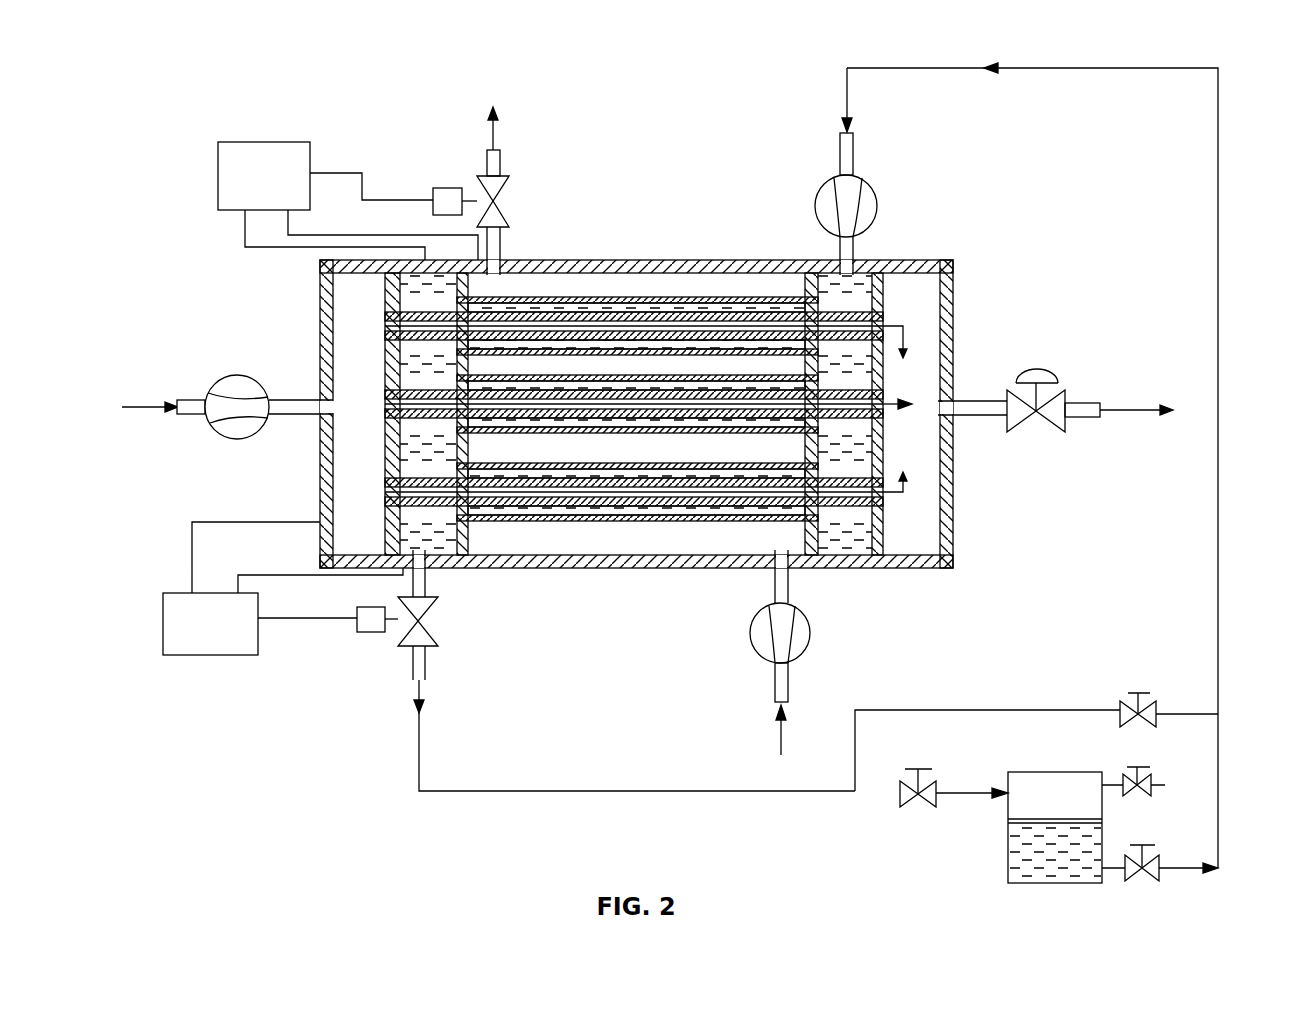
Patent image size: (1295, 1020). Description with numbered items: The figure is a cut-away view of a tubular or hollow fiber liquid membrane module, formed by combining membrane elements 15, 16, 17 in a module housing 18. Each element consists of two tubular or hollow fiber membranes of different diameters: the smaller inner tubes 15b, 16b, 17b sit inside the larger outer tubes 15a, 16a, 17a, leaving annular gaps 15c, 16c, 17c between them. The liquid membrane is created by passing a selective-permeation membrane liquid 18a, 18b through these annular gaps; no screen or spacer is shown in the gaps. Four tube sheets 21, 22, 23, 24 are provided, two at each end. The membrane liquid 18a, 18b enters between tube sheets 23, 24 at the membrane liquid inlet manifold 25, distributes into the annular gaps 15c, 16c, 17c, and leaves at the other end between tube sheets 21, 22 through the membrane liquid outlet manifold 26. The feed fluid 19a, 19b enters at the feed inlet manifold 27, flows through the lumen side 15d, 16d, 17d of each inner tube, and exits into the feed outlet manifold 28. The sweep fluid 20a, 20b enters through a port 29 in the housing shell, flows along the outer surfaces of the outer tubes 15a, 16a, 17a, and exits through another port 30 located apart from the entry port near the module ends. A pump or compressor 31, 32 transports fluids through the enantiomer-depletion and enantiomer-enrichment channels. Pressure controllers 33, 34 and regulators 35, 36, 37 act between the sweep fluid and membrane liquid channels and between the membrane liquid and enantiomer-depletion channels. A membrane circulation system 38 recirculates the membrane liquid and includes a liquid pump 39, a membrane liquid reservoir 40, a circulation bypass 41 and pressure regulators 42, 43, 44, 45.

The membrane element 15 is at (634, 283).
The outer tube 15a is at (653, 300).
The inner tube 15b is at (808, 315).
The annular gap 15c is at (535, 300).
The lumen side 15d is at (363, 345).
The membrane element 16 is at (596, 373).
The outer tube 16a is at (476, 378).
The inner tube 16b is at (417, 392).
The annular gap 16c is at (497, 392).
The lumen side 16d is at (381, 404).
The membrane element 17 is at (625, 530).
The outer tube 17a is at (545, 522).
The inner tube 17b is at (597, 524).
The annular gap 17c is at (641, 524).
The lumen side 17d is at (381, 492).
The module housing 18 is at (634, 262).
The membrane liquid 18a is at (865, 121).
The membrane liquid 18b is at (634, 735).
The feed fluid 19a is at (224, 393).
The feed fluid 19b is at (1055, 396).
The sweep fluid 20a is at (802, 730).
The sweep fluid 20b is at (497, 114).
The tube sheet 21 is at (413, 538).
The tube sheet 22 is at (477, 552).
The tube sheet 23 is at (826, 546).
The tube sheet 24 is at (892, 548).
The membrane liquid inlet manifold 25 is at (870, 270).
The membrane liquid outlet manifold 26 is at (385, 285).
The feed inlet manifold 27 is at (345, 487).
The feed outlet manifold 28 is at (923, 512).
The port 29 is at (775, 679).
The port 30 is at (500, 157).
The pump or compressor 31 is at (222, 380).
The pump or compressor 32 is at (752, 630).
The pressure controller 33 is at (253, 142).
The pressure controller 34 is at (172, 593).
The regulator 35 is at (440, 188).
The regulator 36 is at (362, 632).
The regulator 37 is at (1063, 395).
The membrane circulation system 38 is at (1226, 590).
The liquid pump 39 is at (877, 198).
The membrane liquid reservoir 40 is at (1008, 828).
The circulation bypass 41 is at (1003, 709).
The pressure regulator 42 is at (1133, 693).
The pressure regulator 43 is at (1140, 767).
The pressure regulator 44 is at (1145, 845).
The pressure regulator 45 is at (918, 769).